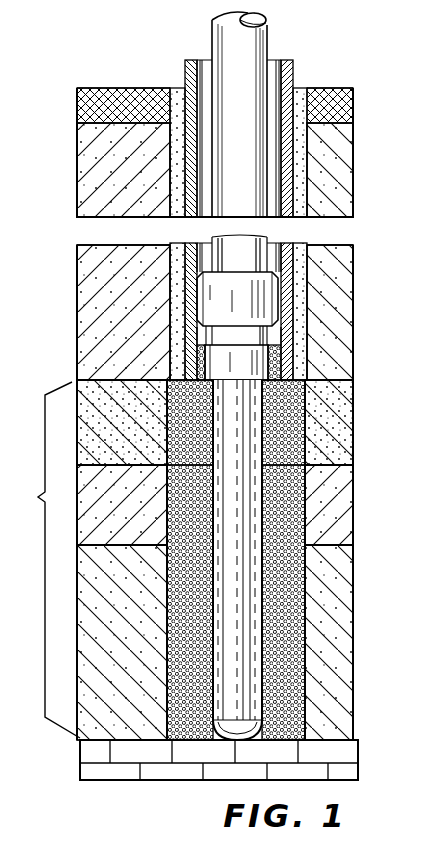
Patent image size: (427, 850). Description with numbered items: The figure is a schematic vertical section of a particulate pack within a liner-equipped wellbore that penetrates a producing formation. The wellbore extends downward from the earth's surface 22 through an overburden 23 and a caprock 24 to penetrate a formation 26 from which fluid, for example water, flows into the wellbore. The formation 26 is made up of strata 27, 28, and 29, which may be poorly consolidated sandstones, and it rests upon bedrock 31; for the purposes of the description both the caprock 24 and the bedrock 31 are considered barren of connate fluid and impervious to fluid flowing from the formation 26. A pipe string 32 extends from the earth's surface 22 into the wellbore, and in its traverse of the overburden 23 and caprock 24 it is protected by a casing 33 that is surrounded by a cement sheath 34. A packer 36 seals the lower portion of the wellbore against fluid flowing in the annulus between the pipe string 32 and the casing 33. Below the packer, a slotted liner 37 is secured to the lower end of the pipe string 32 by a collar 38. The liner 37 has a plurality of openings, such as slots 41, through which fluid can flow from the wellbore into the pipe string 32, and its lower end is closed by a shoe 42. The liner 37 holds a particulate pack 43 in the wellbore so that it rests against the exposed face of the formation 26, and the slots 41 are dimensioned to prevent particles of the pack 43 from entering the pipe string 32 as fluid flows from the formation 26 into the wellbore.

The earth's surface 22 is at (132, 88).
The overburden 23 is at (321, 99).
The caprock 24 is at (90, 284).
The formation 26 is at (45, 560).
The stratum 27 is at (340, 452).
The stratum 28 is at (338, 487).
The stratum 29 is at (340, 563).
The bedrock 31 is at (95, 755).
The pipe string 32 is at (257, 43).
The casing 33 is at (185, 72).
The cement sheath 34 is at (178, 162).
The packer 36 is at (255, 296).
The slotted liner 37 is at (198, 430).
The collar 38 is at (225, 363).
The slots 41 is at (235, 532).
The shoe 42 is at (258, 733).
The particulate pack 43 is at (185, 498).